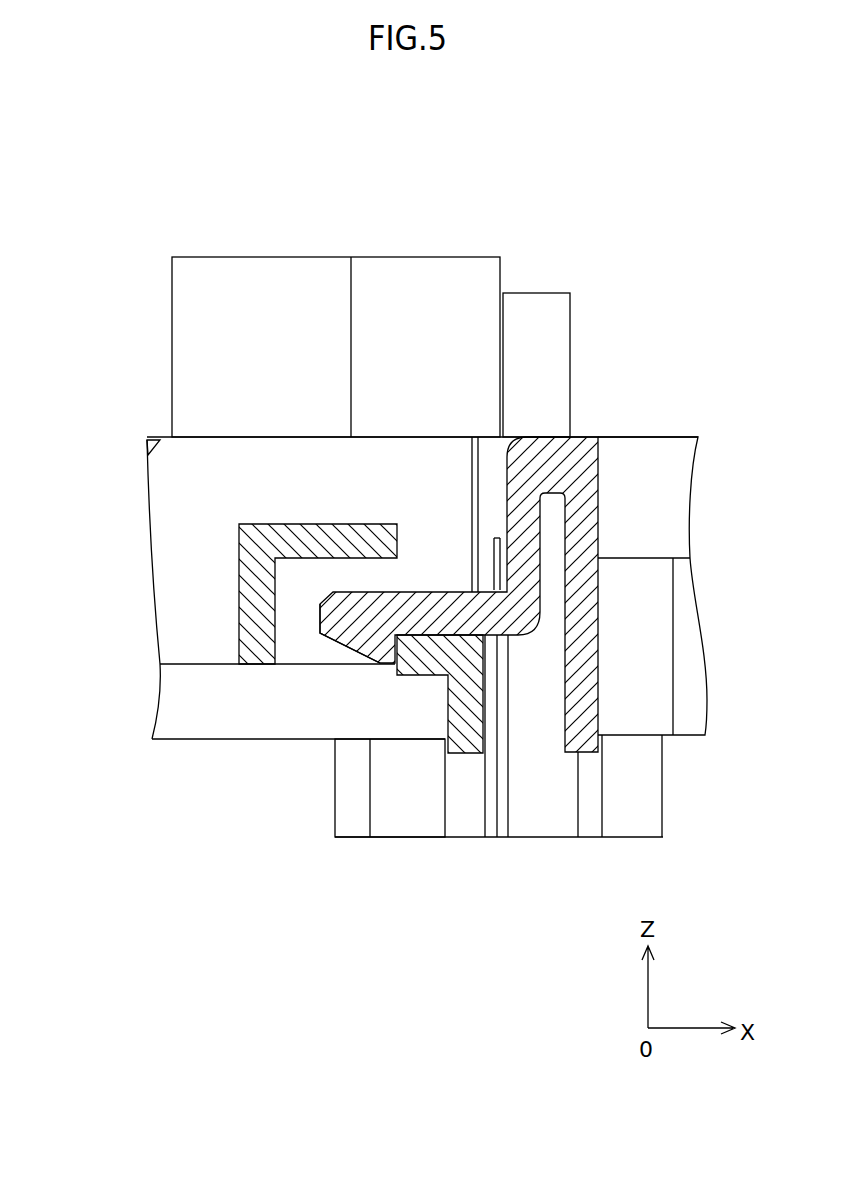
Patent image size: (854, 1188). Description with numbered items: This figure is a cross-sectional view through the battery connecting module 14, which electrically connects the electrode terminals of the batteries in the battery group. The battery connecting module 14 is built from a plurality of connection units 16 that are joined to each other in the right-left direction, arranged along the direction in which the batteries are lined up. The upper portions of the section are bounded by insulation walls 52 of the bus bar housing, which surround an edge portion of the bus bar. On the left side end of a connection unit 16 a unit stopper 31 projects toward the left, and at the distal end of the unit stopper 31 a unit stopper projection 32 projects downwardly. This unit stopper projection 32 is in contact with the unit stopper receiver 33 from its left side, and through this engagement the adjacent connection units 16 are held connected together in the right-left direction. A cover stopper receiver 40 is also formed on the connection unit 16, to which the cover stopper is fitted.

The battery connecting module 14 is at (432, 197).
The cover stopper receiver 40 is at (387, 257).
The insulation wall 52 is at (241, 437).
The connection unit 16 is at (177, 720).
The unit stopper 31 is at (422, 592).
The unit stopper projection 32 is at (351, 637).
The unit stopper receiver 33 is at (423, 658).